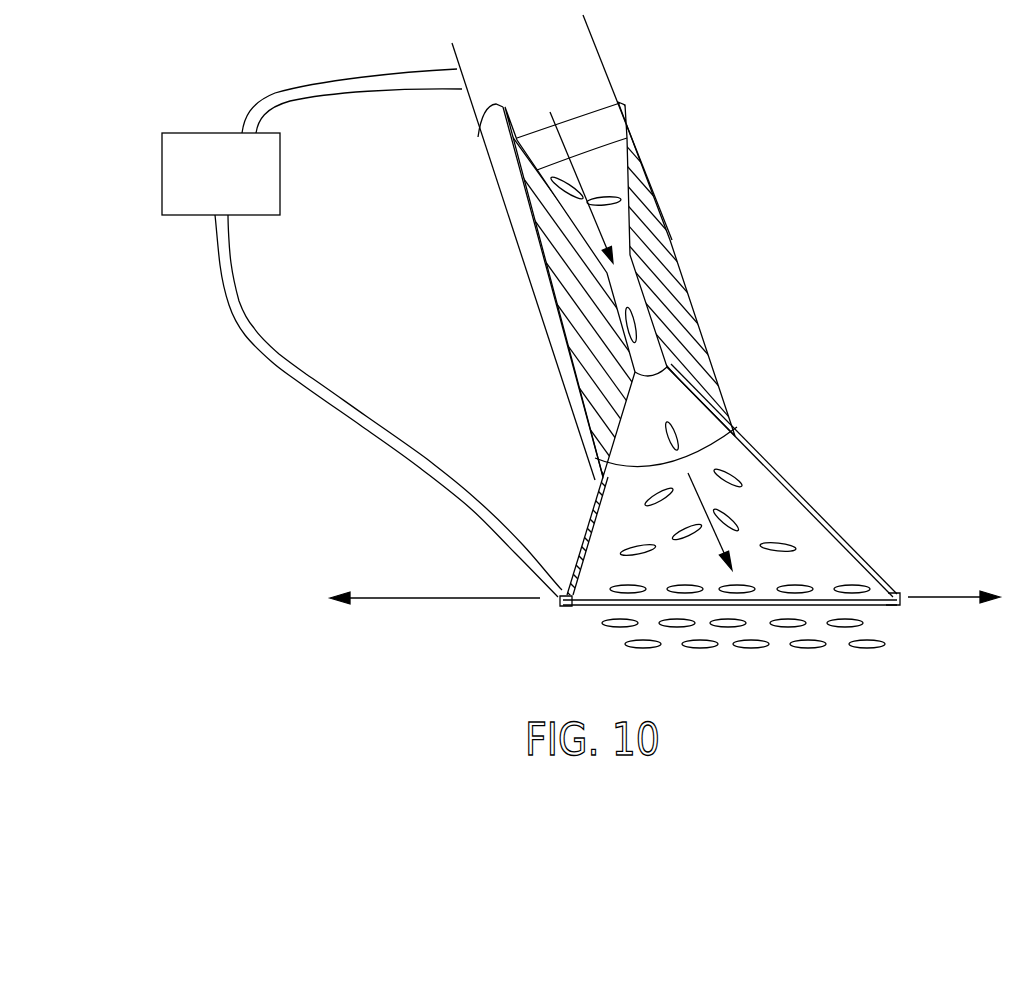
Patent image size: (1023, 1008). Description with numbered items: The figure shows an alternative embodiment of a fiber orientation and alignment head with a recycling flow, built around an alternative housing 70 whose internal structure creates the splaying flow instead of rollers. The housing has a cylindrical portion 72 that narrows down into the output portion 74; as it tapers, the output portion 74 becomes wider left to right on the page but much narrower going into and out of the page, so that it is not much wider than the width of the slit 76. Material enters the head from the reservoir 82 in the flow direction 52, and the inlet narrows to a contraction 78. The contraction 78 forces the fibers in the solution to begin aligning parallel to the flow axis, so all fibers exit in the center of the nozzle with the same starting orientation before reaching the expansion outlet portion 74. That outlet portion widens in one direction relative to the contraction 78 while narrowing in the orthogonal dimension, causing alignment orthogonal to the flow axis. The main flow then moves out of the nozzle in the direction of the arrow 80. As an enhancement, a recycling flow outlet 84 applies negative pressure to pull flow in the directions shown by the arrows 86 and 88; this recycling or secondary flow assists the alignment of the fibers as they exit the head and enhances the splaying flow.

The flow direction 52 is at (553, 118).
The housing 70 is at (665, 214).
The cylindrical portion 72 is at (588, 466).
The output portion 74 is at (590, 472).
The slit 76 is at (783, 602).
The contraction 78 is at (686, 246).
The arrow 80 is at (717, 533).
The reservoir 82 is at (188, 132).
The recycling flow outlet 84 is at (558, 604).
The arrow 86 is at (363, 604).
The arrow 88 is at (978, 604).